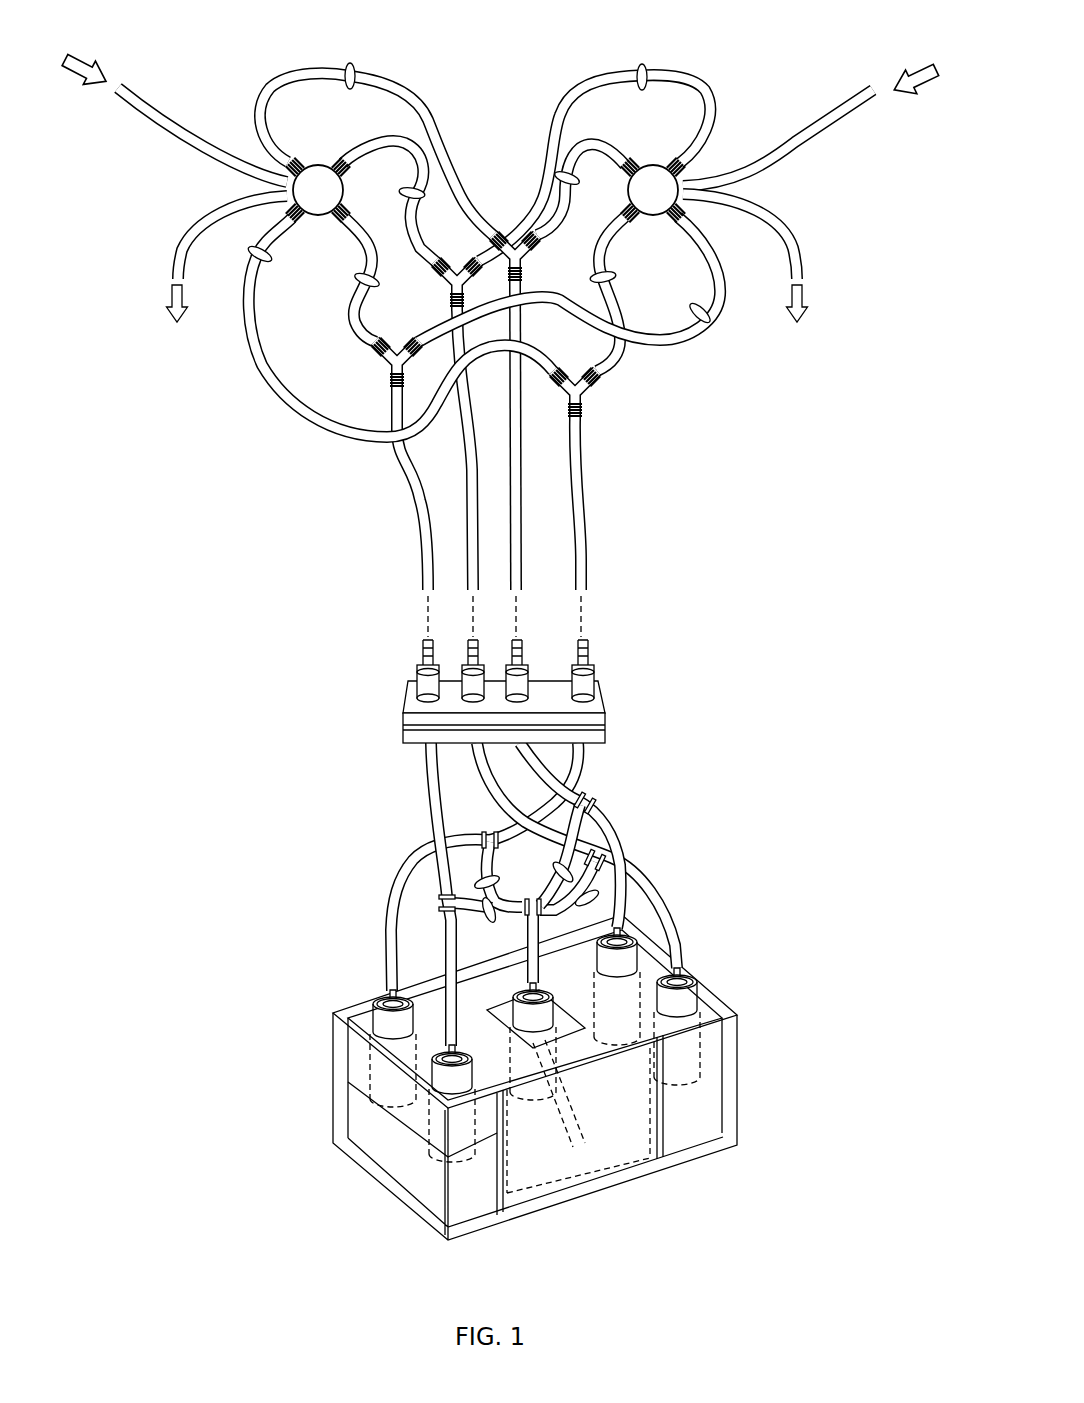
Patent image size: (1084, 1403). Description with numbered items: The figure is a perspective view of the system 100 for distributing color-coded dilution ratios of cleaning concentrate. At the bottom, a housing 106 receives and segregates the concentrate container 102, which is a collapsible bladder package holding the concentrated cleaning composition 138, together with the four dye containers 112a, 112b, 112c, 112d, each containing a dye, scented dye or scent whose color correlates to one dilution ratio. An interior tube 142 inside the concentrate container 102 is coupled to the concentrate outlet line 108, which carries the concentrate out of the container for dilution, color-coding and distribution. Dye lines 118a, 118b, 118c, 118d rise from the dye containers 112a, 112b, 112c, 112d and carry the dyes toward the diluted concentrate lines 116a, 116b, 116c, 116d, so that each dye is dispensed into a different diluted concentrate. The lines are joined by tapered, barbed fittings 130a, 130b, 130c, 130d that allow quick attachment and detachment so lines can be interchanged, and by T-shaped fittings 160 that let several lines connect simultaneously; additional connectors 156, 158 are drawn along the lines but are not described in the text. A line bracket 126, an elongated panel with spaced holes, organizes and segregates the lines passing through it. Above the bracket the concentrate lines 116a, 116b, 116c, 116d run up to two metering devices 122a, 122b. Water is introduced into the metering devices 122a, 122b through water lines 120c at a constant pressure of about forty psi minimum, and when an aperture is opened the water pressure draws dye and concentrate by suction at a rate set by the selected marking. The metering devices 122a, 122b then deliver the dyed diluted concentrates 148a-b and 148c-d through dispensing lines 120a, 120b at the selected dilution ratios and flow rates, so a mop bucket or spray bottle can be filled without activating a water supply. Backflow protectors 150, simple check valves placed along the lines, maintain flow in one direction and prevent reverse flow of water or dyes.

The system 100 is at (180, 65).
The concentrate container 102 is at (643, 1160).
The housing 106 is at (332, 1113).
The concentrate outlet line 108 is at (518, 962).
The dye container 112a is at (367, 1063).
The dye container 112b is at (408, 1117).
The dye container 112c is at (673, 900).
The dye container 112d is at (703, 1043).
The concentrate line 116a is at (412, 497).
The concentrate line 116b is at (427, 537).
The concentrate line 116c is at (523, 537).
The concentrate line 116d is at (580, 490).
The dye line 118a is at (397, 907).
The dye line 118b is at (392, 955).
The dye line 118c is at (683, 943).
The dye line 118d is at (614, 830).
The dispensing line 120a is at (182, 234).
The dispensing line 120b is at (788, 236).
The water line 120c is at (145, 125).
The metering device 122a is at (318, 163).
The metering device 122b is at (653, 163).
The line bracket 126 is at (403, 720).
The fitting 130a is at (420, 662).
The fitting 130b is at (463, 657).
The fitting 130c is at (530, 657).
The fitting 130d is at (597, 662).
The concentrated cleaning composition 138 is at (598, 1165).
The interior tube 142 is at (547, 1117).
The dyed diluted concentrates 148a-b is at (166, 302).
The dyed diluted concentrates 148c-d is at (805, 306).
The backflow protector 150 is at (352, 70).
The recirculation hub 156 is at (533, 906).
The Y connector 158 is at (442, 283).
The T-shaped fitting 160 is at (592, 797).